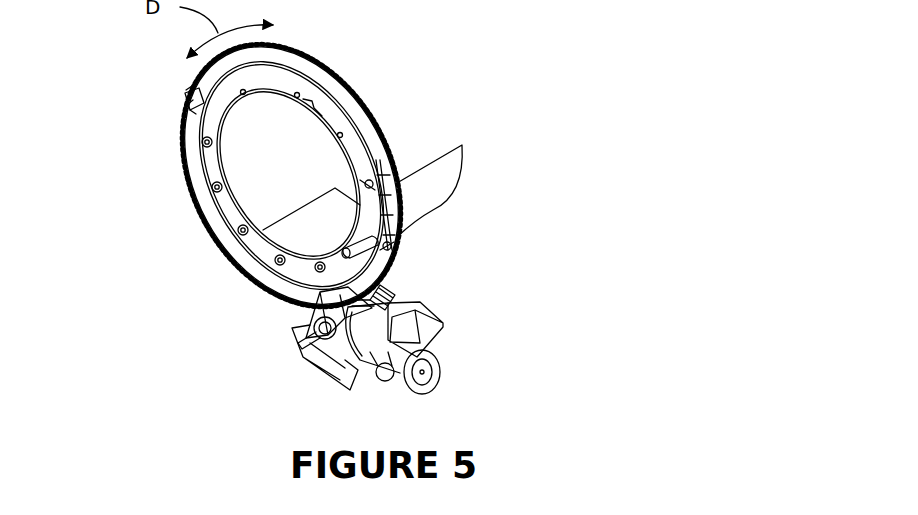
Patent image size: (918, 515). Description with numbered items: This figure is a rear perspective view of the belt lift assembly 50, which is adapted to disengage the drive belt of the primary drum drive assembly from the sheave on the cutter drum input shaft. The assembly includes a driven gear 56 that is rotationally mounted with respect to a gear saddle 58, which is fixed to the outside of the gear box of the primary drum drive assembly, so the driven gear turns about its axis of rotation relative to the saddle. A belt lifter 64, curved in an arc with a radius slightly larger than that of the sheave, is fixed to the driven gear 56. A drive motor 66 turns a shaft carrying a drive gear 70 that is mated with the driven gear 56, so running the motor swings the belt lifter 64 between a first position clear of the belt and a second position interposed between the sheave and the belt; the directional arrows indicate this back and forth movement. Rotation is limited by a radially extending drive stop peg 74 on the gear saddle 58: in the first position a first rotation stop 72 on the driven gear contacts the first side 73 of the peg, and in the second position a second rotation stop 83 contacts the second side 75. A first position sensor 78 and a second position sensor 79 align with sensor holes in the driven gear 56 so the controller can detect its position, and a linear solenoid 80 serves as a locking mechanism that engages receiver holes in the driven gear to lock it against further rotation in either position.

The belt lift assembly 50 is at (467, 72).
The driven gear 56 is at (343, 70).
The gear saddle 58 is at (227, 212).
The belt lifter 64 is at (437, 178).
The drive motor 66 is at (447, 333).
The drive gear 70 is at (403, 292).
The first rotation stop 72 is at (182, 108).
The first side 73 is at (197, 113).
The radially extending drive stop peg 74 is at (183, 93).
The second side 75 is at (198, 92).
The first position sensor 78 is at (397, 180).
The second position sensor 79 is at (363, 180).
The linear solenoid 80 is at (367, 243).
The second rotation stop 83 is at (398, 245).